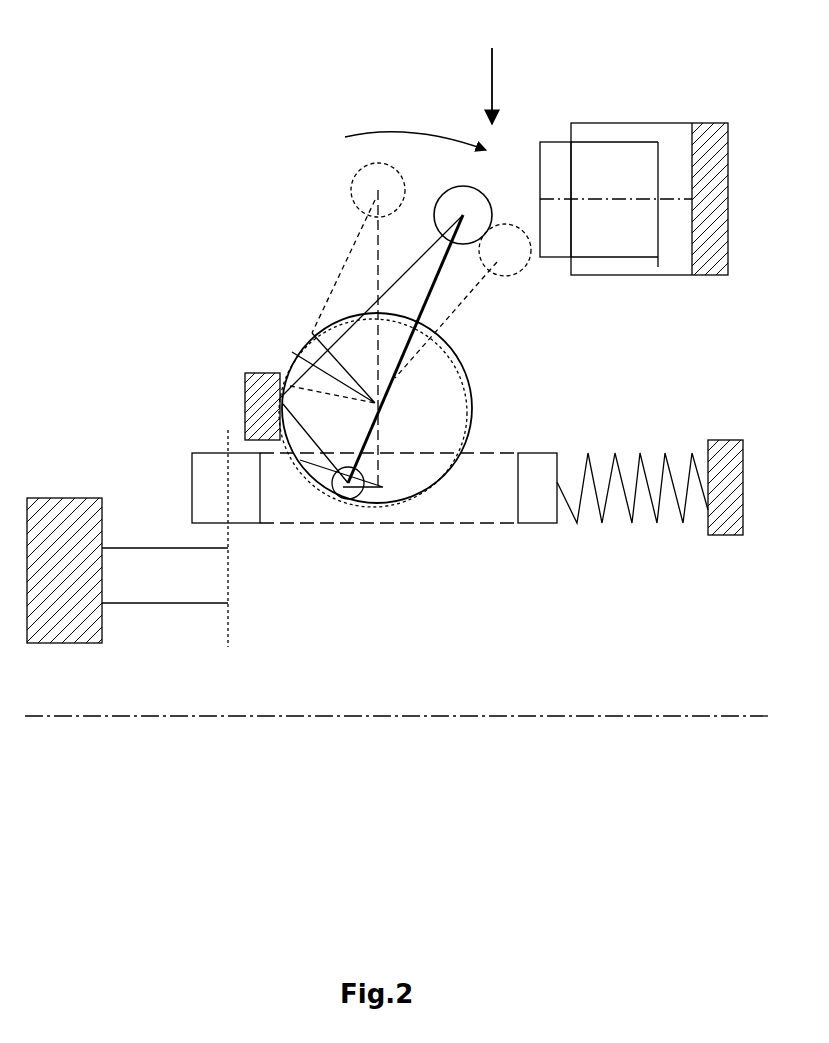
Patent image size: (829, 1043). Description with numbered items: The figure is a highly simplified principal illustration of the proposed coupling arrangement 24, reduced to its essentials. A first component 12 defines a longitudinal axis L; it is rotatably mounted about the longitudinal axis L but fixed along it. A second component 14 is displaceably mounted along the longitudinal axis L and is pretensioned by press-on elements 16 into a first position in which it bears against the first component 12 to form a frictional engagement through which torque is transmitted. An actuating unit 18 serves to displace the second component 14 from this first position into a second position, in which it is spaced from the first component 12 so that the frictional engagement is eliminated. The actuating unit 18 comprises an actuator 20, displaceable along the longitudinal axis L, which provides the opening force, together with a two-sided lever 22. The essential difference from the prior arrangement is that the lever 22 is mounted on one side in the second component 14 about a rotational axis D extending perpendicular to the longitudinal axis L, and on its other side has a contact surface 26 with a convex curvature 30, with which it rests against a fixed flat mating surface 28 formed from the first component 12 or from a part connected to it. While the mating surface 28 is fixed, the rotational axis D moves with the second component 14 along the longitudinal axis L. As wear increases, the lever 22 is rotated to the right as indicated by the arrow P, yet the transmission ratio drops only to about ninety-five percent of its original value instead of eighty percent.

The first component 12 is at (248, 370).
The second component 14 is at (480, 515).
The press-on elements 16 is at (641, 452).
The actuating unit 18 is at (494, 66).
The actuator 20 is at (622, 130).
The two-sided lever 22 is at (462, 402).
The coupling arrangement 24 is at (142, 95).
The contact surface 26 is at (318, 330).
The fixed flat mating surface 28 is at (285, 380).
The convex curvature 30 is at (316, 302).
The arrow P is at (408, 133).
The rotational axis D is at (410, 489).
The longitudinal axis L is at (597, 714).